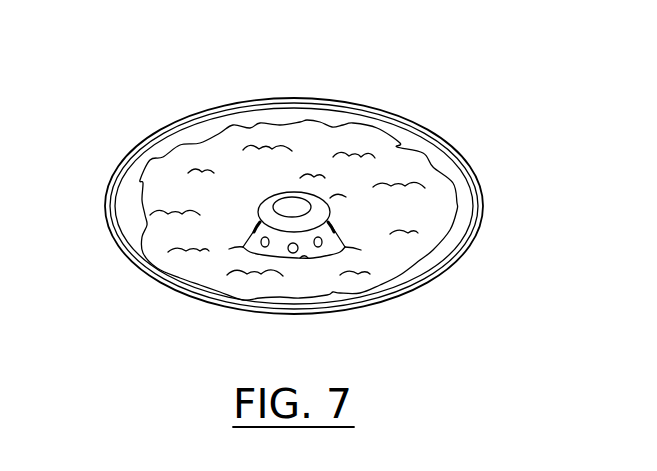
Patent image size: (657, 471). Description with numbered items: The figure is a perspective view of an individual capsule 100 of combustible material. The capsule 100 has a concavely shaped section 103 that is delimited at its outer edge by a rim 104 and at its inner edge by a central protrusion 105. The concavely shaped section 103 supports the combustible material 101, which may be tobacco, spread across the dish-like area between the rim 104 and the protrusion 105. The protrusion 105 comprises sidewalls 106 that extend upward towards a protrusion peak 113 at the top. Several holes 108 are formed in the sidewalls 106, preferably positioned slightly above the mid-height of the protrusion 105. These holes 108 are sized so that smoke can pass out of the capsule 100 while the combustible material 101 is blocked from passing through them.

The capsule 100 is at (276, 197).
The combustible material 101 is at (253, 133).
The concavely shaped section 103 is at (342, 120).
The rim 104 is at (440, 142).
The protrusion 105 is at (232, 259).
The sidewalls 106 is at (278, 250).
The holes 108 is at (327, 242).
The protrusion peak 113 is at (265, 205).